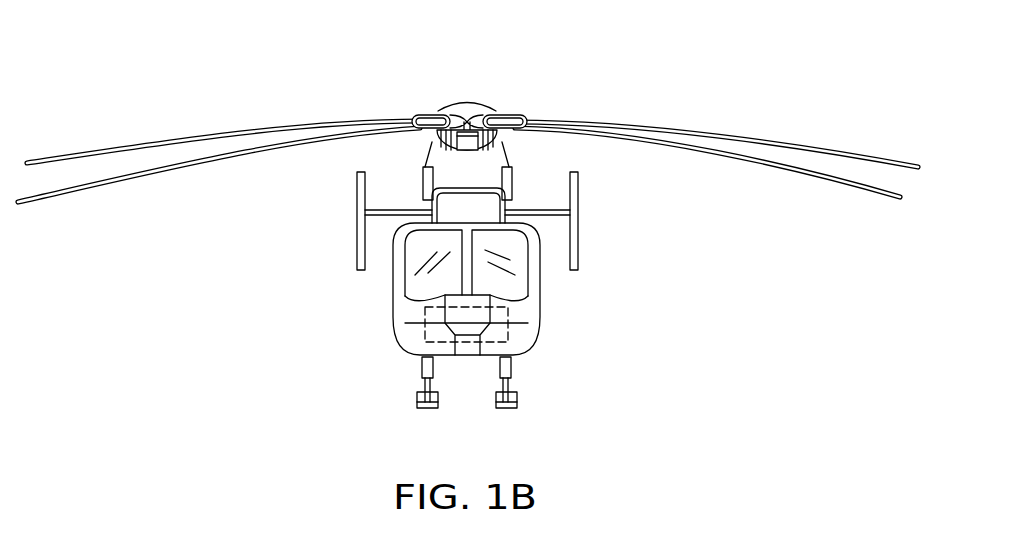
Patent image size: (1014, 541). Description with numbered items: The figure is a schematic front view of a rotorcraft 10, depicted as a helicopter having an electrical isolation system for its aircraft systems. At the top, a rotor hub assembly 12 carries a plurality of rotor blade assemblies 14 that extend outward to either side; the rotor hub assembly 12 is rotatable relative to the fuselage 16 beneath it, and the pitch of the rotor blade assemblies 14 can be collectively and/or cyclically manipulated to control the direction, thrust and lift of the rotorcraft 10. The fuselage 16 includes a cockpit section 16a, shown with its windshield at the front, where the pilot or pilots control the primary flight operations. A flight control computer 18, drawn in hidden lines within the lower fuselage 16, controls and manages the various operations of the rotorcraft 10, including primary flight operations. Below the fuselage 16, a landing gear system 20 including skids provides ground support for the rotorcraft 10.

The rotorcraft 10 is at (389, 74).
The rotor hub assembly 12 is at (471, 96).
The rotor blade assemblies 14 is at (824, 146).
The fuselage 16 is at (540, 330).
The cockpit section 16a is at (514, 290).
The flight control computer 18 is at (425, 310).
The landing gear system 20 is at (427, 409).